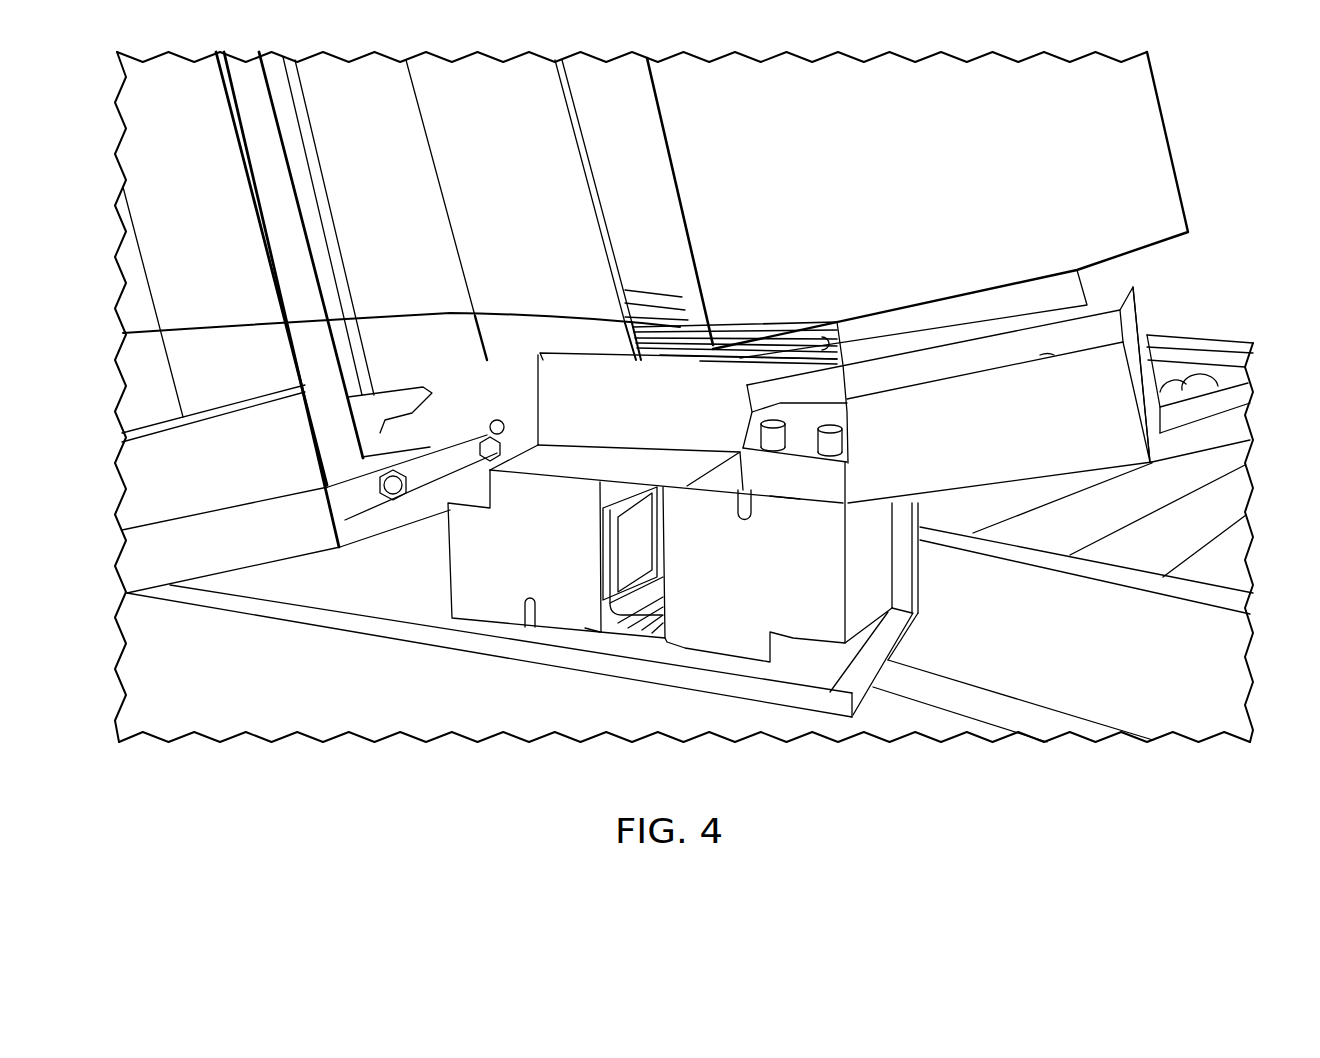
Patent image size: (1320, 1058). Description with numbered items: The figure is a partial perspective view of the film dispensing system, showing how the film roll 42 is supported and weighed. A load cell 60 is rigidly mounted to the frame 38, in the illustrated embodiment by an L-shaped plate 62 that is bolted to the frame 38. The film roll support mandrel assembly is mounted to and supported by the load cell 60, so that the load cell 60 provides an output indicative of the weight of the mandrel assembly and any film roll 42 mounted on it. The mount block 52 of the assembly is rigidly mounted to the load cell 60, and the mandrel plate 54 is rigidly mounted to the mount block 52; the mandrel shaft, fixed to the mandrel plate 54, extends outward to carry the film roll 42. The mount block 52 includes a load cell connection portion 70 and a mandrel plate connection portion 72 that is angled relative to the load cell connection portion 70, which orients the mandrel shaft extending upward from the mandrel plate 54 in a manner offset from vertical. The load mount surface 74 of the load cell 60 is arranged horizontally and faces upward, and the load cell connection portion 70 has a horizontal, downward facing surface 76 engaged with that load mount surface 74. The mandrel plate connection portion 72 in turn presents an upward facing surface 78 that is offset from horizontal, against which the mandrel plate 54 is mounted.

The frame 38 is at (537, 353).
The film roll 42 is at (1163, 177).
The mount block 52 is at (948, 480).
The mandrel plate 54 is at (1130, 308).
The load cell 60 is at (562, 663).
The L-shaped plate 62 is at (832, 678).
The load cell connection portion 70 is at (830, 473).
The mandrel plate connection portion 72 is at (1008, 433).
The load mount surface 74 is at (727, 480).
The downward facing surface 76 is at (785, 495).
The upward facing surface 78 is at (1062, 357).